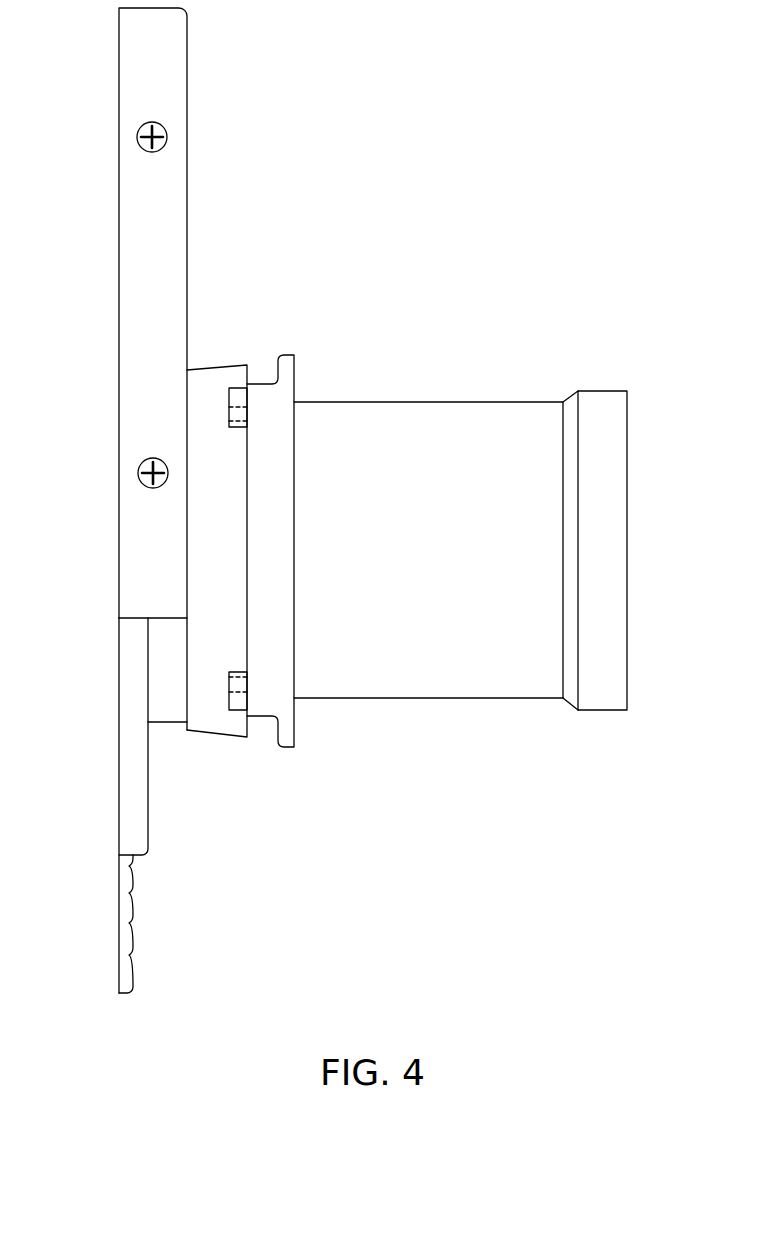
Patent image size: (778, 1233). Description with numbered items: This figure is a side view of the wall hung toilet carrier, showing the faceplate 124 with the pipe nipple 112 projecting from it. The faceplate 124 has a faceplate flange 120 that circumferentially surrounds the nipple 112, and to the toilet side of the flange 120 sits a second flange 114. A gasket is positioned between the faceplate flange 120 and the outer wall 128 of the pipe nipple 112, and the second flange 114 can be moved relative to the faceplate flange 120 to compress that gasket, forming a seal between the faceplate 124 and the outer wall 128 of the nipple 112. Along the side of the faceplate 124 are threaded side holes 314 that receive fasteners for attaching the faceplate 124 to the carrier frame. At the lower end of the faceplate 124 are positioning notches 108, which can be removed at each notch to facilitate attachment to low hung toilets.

The positioning notches 108 is at (133, 925).
The pipe nipple 112 is at (627, 550).
The second flange 114 is at (294, 378).
The faceplate flange 120 is at (248, 651).
The faceplate 124 is at (119, 735).
The outer wall 128 is at (470, 699).
The threaded side holes 314 is at (137, 137).